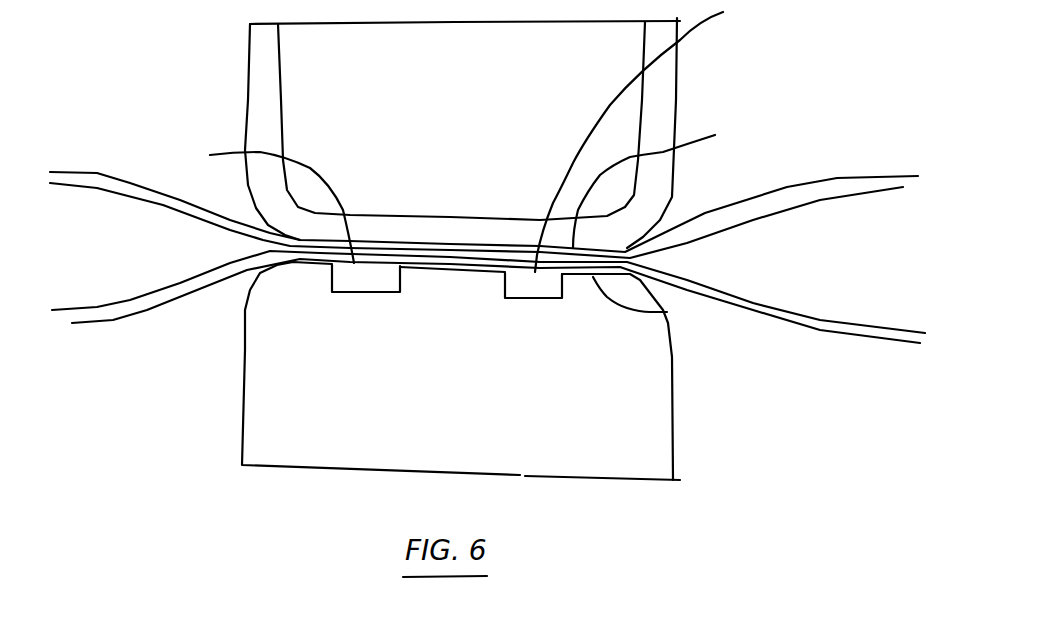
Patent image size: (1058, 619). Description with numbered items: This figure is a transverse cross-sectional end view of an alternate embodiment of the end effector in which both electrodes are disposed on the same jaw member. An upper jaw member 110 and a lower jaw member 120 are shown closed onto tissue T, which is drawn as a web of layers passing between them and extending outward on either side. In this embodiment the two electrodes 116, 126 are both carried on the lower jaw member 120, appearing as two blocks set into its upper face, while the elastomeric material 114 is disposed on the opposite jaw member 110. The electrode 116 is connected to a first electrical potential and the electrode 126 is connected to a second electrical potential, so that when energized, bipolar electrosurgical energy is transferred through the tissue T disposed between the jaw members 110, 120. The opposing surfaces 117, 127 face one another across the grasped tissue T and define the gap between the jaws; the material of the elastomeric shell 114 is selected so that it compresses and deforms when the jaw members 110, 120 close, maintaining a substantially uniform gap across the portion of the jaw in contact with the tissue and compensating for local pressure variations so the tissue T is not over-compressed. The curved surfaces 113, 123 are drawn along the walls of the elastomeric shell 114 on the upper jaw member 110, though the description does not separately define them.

The jaw member 110 is at (480, 100).
The die wall surface 113 is at (259, 203).
The elastomeric shell 114 is at (265, 80).
The electrode 116 is at (353, 282).
The opposing surface 117 is at (664, 185).
The jaw member 120 is at (470, 419).
The die wall surface 123 is at (651, 136).
The electrode 126 is at (537, 292).
The opposing surface 127 is at (667, 312).
The tissue T is at (838, 187).